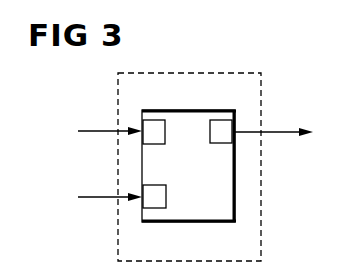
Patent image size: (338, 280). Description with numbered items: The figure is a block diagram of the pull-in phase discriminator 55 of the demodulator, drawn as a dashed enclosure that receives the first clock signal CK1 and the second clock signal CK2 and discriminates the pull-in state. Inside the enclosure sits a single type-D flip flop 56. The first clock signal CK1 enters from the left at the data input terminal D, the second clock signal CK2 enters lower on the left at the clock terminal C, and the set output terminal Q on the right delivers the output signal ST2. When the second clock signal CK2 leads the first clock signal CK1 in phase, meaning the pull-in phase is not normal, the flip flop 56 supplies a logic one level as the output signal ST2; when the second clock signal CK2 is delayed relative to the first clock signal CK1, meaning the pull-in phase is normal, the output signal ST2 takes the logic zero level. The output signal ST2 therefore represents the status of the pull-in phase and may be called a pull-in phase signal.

The pull-in phase discriminator 55 is at (262, 231).
The type-D flip flop 56 is at (208, 110).
The first clock signal CK1 is at (110, 124).
The second clock signal CK2 is at (110, 190).
The output signal ST2 is at (274, 125).